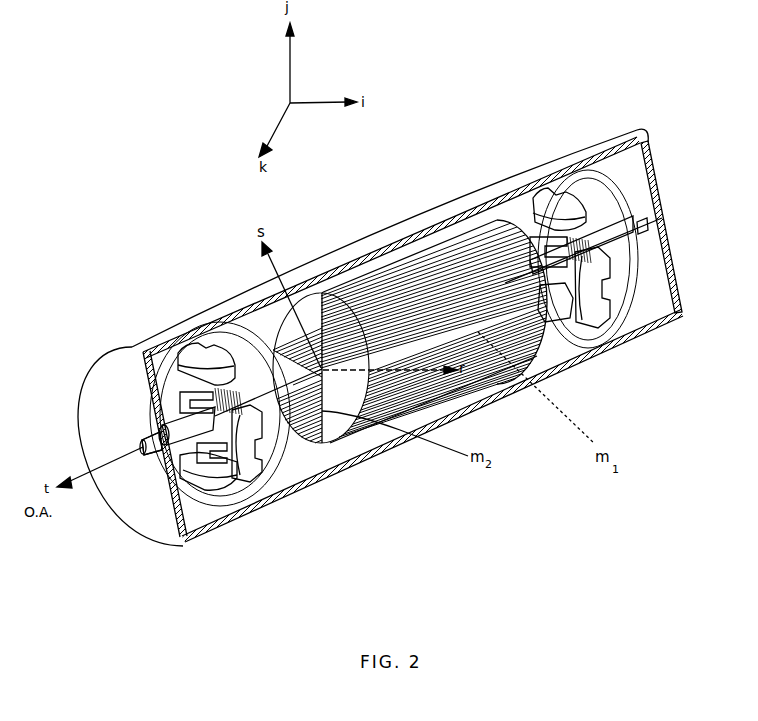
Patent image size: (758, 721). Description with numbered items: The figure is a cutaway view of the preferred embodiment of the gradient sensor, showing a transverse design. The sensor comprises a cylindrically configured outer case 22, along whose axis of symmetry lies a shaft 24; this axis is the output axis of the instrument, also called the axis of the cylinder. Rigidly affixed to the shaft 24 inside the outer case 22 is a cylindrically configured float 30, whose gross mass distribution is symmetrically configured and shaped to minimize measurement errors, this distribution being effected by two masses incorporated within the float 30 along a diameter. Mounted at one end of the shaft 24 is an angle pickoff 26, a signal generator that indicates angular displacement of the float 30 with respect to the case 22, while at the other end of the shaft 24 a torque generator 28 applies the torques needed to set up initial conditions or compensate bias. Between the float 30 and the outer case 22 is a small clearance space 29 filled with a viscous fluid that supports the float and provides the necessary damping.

The outer case 22 is at (633, 139).
The shaft 24 is at (190, 446).
The angle pickoff 26 is at (268, 462).
The torque generator 28 is at (632, 352).
The clearance space 29 is at (350, 278).
The float 30 is at (433, 242).